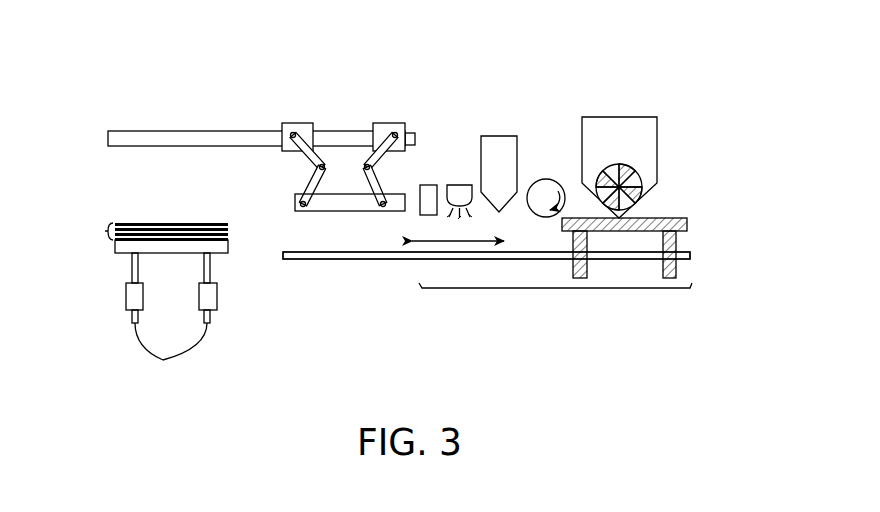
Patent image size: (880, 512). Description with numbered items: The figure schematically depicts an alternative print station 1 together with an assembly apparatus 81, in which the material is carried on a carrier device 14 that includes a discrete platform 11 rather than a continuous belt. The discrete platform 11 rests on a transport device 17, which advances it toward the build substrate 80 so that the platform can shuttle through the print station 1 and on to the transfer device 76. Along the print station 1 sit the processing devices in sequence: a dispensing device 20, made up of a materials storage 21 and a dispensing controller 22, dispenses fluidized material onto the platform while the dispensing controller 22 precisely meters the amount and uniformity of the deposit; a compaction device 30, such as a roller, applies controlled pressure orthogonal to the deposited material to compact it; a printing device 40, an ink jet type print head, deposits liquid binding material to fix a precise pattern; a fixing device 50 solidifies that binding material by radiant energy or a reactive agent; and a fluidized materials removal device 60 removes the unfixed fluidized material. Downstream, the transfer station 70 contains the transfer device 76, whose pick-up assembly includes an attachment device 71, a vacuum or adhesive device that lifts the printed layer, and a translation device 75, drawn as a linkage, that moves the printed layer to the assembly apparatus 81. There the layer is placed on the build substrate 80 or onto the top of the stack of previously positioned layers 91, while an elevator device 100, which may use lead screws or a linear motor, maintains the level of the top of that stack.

The print station 1 is at (555, 288).
The discrete platform 11 is at (660, 215).
The carrier device 14 is at (692, 242).
The transport device 17 is at (382, 260).
The dispensing device 20 is at (663, 135).
The materials storage 21 is at (657, 131).
The dispensing controller 22 is at (642, 178).
The compaction device 30 is at (535, 183).
The printing device 40 is at (499, 150).
The fixing device 50 is at (455, 184).
The fluidized materials removal device 60 is at (425, 184).
The transfer station 70 is at (330, 252).
The attachment device 71 is at (295, 204).
The translation device 75 is at (303, 158).
The transfer device 76 is at (275, 113).
The build substrate 80 is at (120, 247).
The assembly apparatus 81 is at (137, 273).
The stack of previously positioned layers 91 is at (154, 233).
The elevator device 100 is at (171, 356).